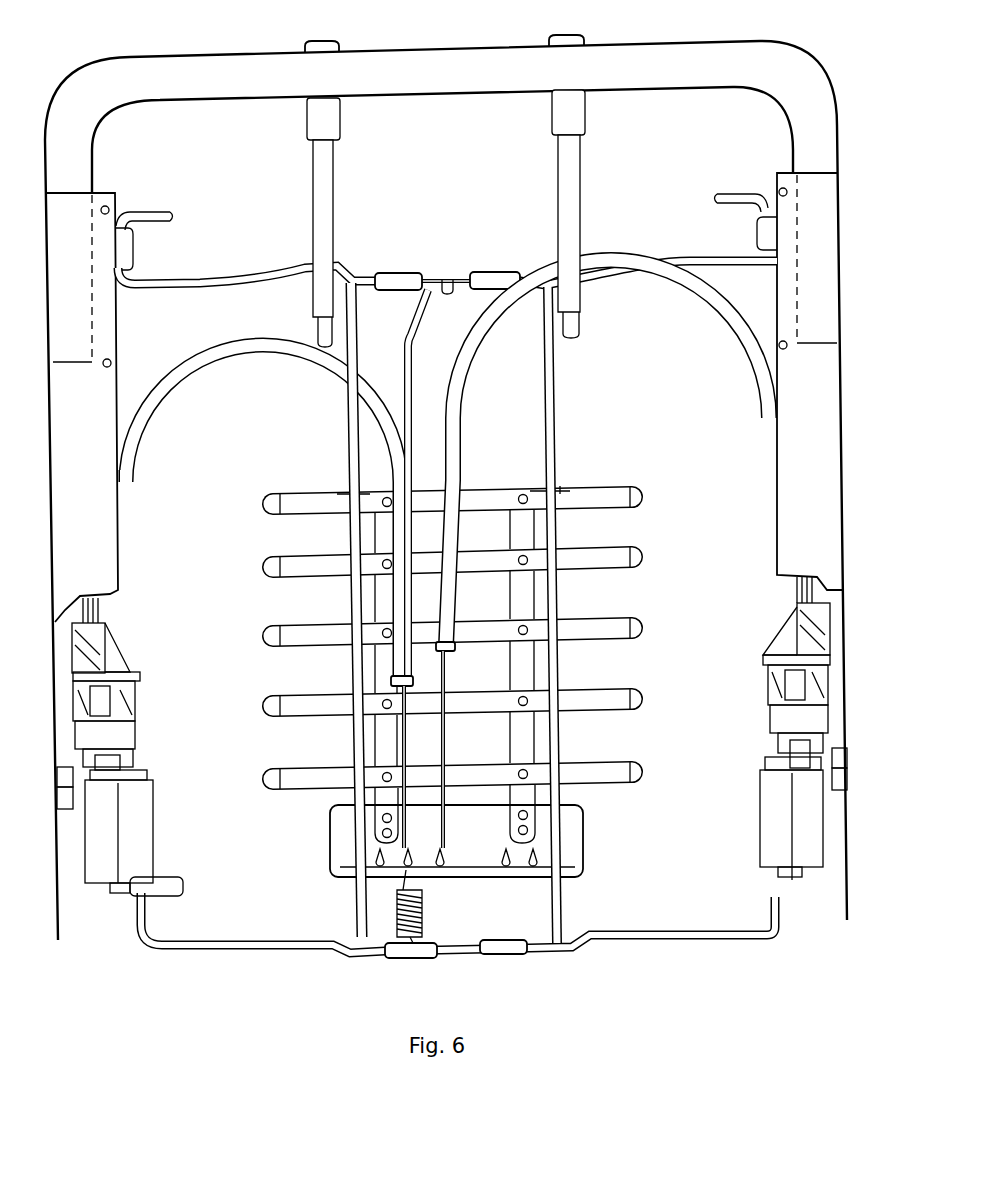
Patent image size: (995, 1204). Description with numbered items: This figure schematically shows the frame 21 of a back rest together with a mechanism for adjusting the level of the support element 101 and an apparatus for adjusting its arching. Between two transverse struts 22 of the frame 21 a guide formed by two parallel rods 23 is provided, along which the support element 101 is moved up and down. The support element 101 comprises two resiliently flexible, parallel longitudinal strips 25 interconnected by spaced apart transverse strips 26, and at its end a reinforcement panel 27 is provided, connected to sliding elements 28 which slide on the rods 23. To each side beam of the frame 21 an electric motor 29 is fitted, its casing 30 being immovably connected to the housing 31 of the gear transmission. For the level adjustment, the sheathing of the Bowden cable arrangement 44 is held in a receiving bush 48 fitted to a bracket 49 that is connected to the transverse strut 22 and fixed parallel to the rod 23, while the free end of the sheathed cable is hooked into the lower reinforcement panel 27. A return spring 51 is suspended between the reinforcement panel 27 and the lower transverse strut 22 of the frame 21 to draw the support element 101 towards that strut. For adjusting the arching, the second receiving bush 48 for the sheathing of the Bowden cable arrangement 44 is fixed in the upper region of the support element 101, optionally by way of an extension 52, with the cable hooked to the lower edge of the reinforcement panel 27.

The frame 21 is at (790, 84).
The transverse strut 22 is at (229, 268).
The rod 23 is at (352, 432).
The longitudinal strip 25 is at (527, 600).
The transverse strip 26 is at (643, 770).
The reinforcement panel 27 is at (573, 840).
The sliding element 28 is at (563, 490).
The electric motor 29 is at (116, 838).
The casing 30 is at (805, 798).
The housing 31 is at (797, 627).
The Bowden cable arrangement 44 is at (247, 343).
The receiving bush 48 is at (397, 683).
The bracket 49 is at (415, 343).
The return spring 51 is at (398, 957).
The extension 52 is at (456, 613).
The support element 101 is at (610, 486).